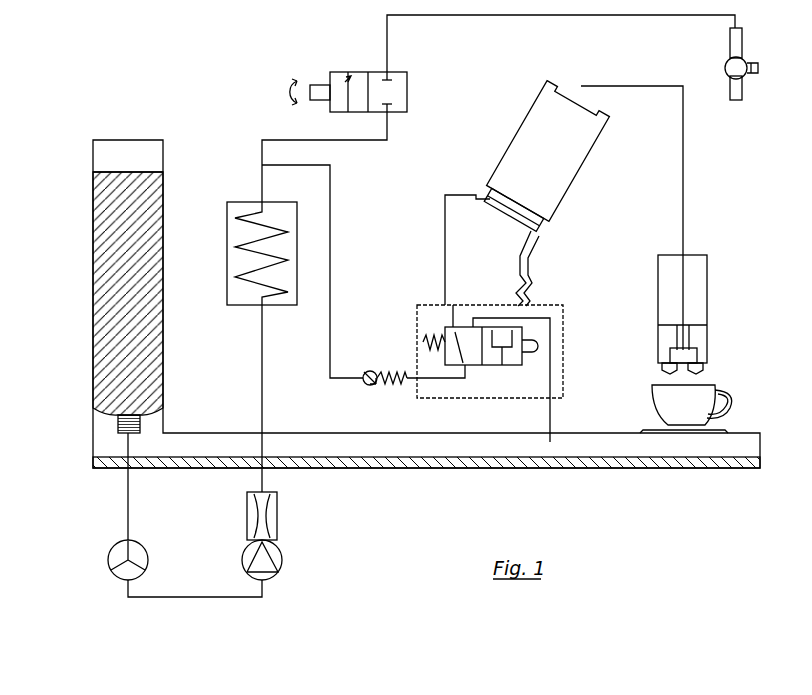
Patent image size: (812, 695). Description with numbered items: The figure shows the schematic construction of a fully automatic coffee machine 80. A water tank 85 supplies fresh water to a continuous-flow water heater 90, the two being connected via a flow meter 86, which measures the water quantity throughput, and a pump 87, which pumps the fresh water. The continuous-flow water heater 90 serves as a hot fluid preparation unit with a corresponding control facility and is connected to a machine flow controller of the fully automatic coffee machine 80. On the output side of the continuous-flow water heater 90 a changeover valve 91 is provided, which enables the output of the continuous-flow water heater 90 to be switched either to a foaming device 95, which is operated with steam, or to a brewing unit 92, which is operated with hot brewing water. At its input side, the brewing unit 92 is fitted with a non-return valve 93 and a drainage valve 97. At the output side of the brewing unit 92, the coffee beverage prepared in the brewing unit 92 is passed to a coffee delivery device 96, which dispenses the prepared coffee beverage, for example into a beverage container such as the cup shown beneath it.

The fully automatic coffee machine 80 is at (737, 193).
The water tank 85 is at (113, 253).
The flow meter 86 is at (113, 557).
The pump 87 is at (265, 565).
The continuous-flow water heater 90 is at (250, 302).
The changeover valve 91 is at (357, 73).
The brewing unit 92 is at (558, 168).
The non-return valve 93 is at (367, 385).
The foaming device 95 is at (742, 61).
The coffee delivery device 96 is at (692, 300).
The drainage valve 97 is at (470, 390).